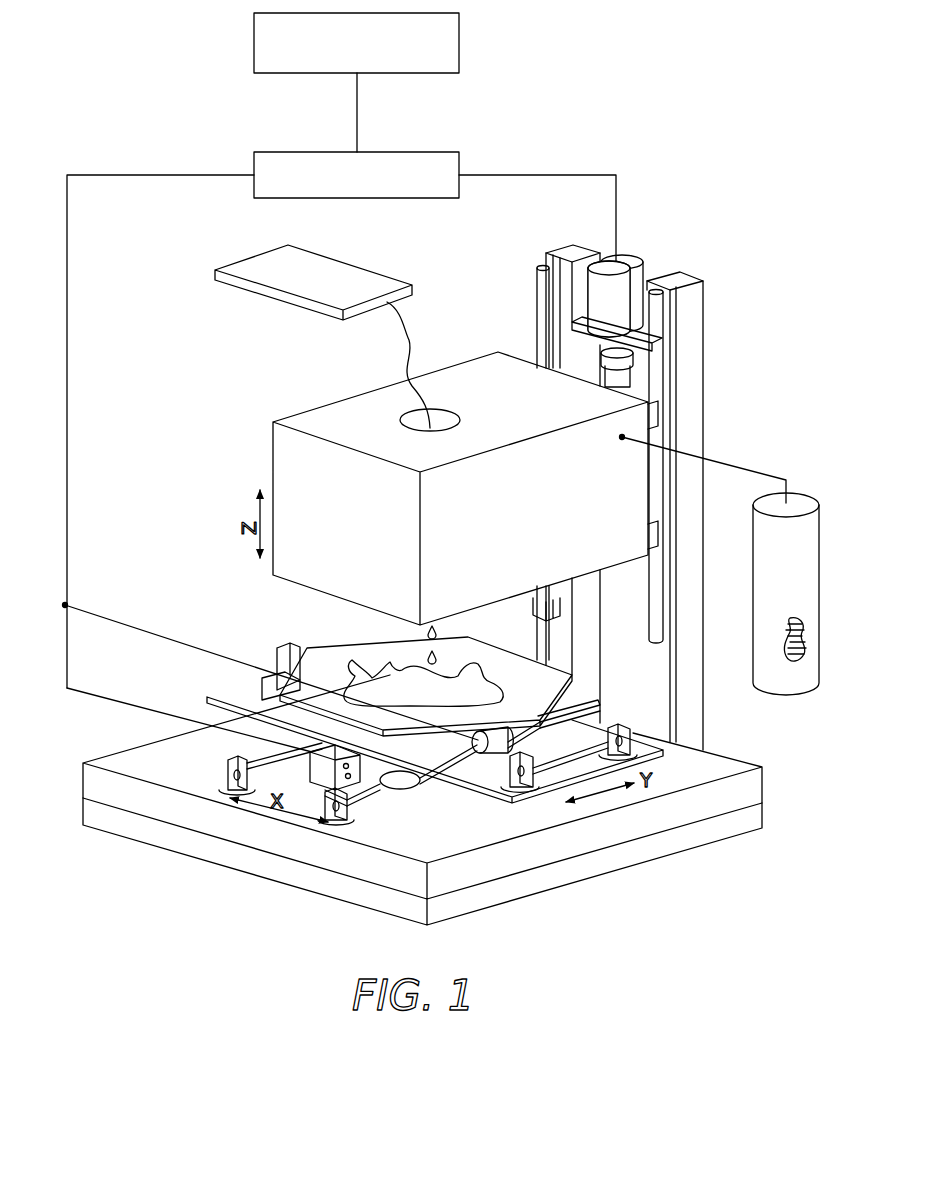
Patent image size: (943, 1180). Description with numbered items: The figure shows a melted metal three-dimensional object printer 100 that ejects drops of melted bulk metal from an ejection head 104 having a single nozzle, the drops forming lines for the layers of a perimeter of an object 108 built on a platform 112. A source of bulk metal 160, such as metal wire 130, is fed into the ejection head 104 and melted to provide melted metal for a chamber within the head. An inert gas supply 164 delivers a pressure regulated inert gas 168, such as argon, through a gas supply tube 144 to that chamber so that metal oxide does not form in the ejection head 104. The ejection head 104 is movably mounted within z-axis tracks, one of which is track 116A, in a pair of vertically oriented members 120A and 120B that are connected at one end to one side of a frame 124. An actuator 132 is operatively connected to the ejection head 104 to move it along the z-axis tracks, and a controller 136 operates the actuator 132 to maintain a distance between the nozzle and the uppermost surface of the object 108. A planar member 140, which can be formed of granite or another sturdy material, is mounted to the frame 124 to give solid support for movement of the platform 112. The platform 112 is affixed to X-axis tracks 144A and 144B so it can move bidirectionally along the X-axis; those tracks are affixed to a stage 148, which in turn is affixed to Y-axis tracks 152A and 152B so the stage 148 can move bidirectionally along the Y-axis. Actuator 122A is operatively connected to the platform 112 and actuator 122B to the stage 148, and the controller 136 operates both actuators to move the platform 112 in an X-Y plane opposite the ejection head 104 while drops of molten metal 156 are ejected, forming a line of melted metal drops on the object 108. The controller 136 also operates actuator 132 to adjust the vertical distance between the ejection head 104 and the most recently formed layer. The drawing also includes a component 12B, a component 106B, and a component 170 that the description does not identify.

The melted metal three-dimensional object printer 100 is at (664, 184).
The ejection head 104 is at (340, 410).
The vertical rod 106B is at (666, 360).
The object 108 is at (482, 688).
The platform 112 is at (318, 650).
The z-axis track 116A is at (548, 286).
The vertically oriented member 120A is at (540, 334).
The vertically oriented member 120B is at (656, 600).
The actuator 122A is at (272, 683).
The actuator 122B is at (352, 790).
The frame 124 is at (105, 820).
The bracket 12B is at (622, 350).
The metal wire 130 is at (413, 350).
The actuator 132 is at (622, 266).
The controller 136 is at (418, 151).
The planar member 140 is at (125, 763).
The gas supply tube 144 is at (748, 465).
The X-axis track 144A is at (248, 745).
The X-axis track 144B is at (384, 788).
The stage 148 is at (242, 697).
The Y-axis track 152A is at (498, 760).
The Y-axis track 152B is at (590, 725).
The drops of molten metal 156 is at (428, 666).
The source of bulk metal 160 is at (342, 272).
The inert gas supply 164 is at (753, 586).
The inert gas 168 is at (797, 660).
The user interface 170 is at (460, 43).